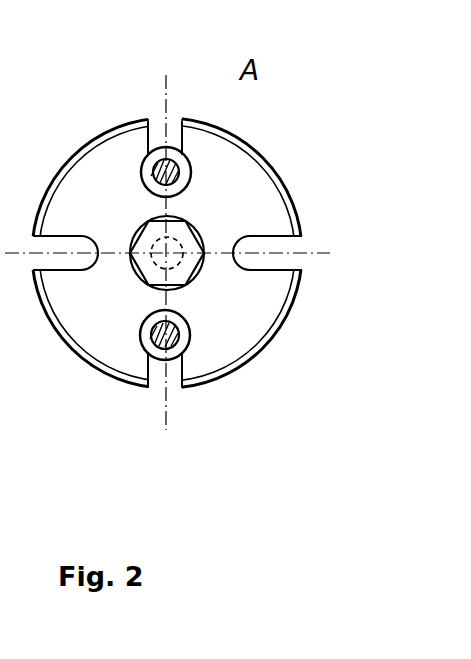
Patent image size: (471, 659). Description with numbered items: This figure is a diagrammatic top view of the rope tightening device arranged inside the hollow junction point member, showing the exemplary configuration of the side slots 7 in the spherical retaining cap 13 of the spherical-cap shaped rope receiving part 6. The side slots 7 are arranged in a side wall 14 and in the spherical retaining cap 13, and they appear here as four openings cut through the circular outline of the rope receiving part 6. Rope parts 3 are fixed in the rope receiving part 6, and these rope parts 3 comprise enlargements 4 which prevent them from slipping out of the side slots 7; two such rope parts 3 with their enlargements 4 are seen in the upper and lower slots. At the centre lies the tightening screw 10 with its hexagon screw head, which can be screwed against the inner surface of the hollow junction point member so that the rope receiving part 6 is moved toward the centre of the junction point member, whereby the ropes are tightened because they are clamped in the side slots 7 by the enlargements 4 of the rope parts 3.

The rope parts 3 is at (183, 184).
The enlargements 4 is at (171, 187).
The spherical-cap shaped rope receiving part 6 is at (80, 140).
The side slots 7 is at (268, 265).
The tightening screw 10 is at (137, 272).
The spherical retaining cap 13 is at (227, 337).
The side wall 14 is at (273, 172).